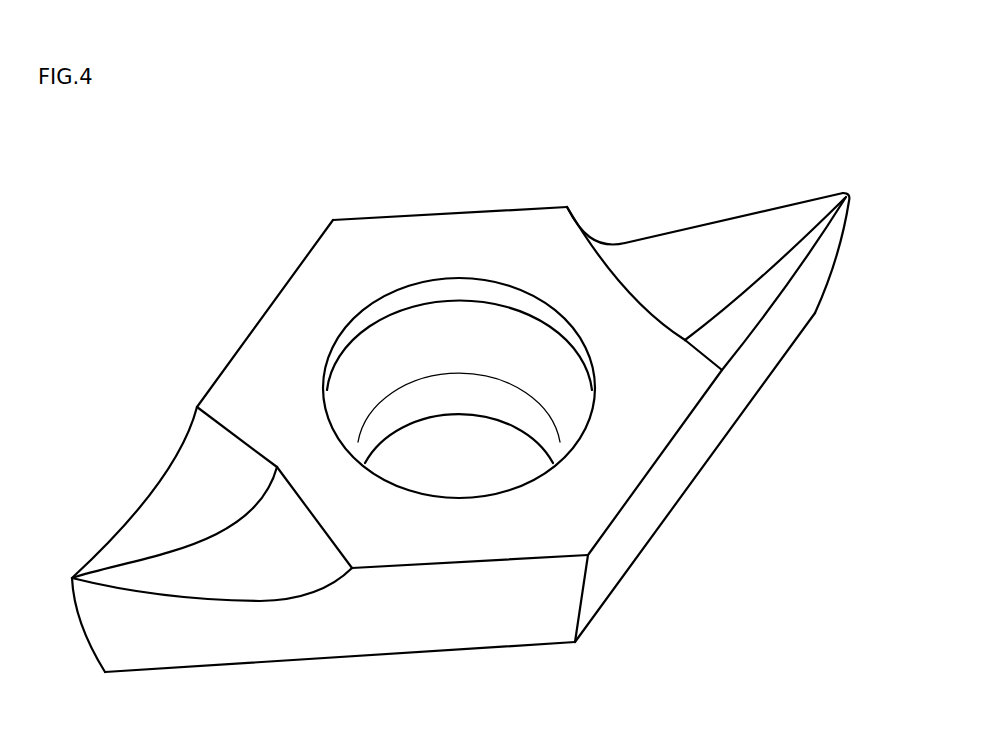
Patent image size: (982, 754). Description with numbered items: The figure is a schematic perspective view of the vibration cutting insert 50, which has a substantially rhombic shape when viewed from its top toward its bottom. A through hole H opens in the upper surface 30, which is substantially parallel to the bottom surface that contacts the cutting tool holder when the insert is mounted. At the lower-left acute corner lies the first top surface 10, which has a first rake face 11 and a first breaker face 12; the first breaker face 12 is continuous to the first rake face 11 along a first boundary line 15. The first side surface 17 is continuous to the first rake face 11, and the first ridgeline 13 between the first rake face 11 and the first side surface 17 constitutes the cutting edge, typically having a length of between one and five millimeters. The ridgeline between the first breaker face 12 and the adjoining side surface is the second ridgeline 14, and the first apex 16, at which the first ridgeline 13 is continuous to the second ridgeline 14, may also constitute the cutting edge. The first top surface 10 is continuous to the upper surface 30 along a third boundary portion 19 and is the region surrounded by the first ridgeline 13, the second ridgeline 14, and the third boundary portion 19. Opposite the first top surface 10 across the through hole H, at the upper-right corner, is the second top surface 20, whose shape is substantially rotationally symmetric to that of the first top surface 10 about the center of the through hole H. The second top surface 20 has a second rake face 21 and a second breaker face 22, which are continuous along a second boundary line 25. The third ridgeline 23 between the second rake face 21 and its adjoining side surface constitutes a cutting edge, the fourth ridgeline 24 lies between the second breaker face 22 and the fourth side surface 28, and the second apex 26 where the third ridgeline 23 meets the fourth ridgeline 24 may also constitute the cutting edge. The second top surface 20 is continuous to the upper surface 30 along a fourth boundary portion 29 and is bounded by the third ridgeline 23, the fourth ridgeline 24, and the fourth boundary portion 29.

The vibration cutting insert 50 is at (740, 143).
The upper surface 30 is at (308, 293).
The through hole H is at (449, 295).
The third boundary portion 19 is at (240, 435).
The first top surface 10 is at (87, 418).
The first breaker face 12 is at (147, 525).
The first boundary line 15 is at (178, 547).
The first rake face 11 is at (208, 565).
The second ridgeline 14 is at (102, 545).
The first apex 16 is at (72, 577).
The first ridgeline 13 is at (162, 597).
The first side surface 17 is at (230, 627).
The third ridgeline 23 is at (787, 207).
The second apex 26 is at (850, 196).
The fourth side surface 28 is at (723, 402).
The fourth ridgeline 24 is at (783, 303).
The second breaker face 22 is at (747, 320).
The fourth boundary portion 29 is at (615, 270).
The second rake face 21 is at (702, 267).
The second boundary line 25 is at (685, 320).
The second top surface 20 is at (652, 186).